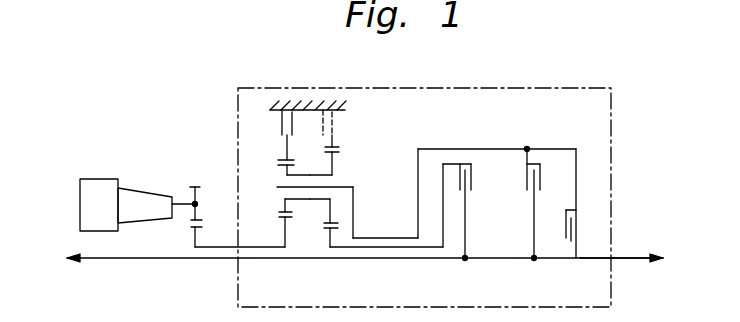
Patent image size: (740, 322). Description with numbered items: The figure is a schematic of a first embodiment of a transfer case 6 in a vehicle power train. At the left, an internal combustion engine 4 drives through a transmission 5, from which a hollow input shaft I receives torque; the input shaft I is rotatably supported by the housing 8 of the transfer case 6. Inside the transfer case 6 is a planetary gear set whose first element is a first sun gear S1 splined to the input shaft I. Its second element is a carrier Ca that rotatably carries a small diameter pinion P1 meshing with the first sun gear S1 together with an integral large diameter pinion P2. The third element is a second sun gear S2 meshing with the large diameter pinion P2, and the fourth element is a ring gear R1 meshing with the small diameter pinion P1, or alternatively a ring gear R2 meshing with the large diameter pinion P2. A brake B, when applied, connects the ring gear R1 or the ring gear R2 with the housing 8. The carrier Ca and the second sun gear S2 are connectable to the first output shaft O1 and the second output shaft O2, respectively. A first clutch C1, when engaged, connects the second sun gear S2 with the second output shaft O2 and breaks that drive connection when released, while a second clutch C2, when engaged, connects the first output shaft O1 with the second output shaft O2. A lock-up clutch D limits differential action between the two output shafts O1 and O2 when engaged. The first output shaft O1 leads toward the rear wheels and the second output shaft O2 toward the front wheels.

The internal combustion engine 4 is at (93, 193).
The transmission 5 is at (142, 207).
The transfer case 6 is at (502, 82).
The housing 8 is at (310, 108).
The brake B is at (280, 122).
The ring gear R1 is at (278, 163).
The ring gear R2 is at (340, 150).
The small diameter pinion P1 is at (285, 173).
The large diameter pinion P2 is at (333, 168).
The carrier Ca is at (350, 185).
The first sun gear S1 is at (287, 229).
The second sun gear S2 is at (330, 238).
The first clutch C1 is at (472, 177).
The second clutch C2 is at (542, 175).
The lock-up clutch D is at (577, 230).
The input shaft I is at (257, 247).
The first output shaft O1 is at (630, 255).
The second output shaft O2 is at (103, 257).